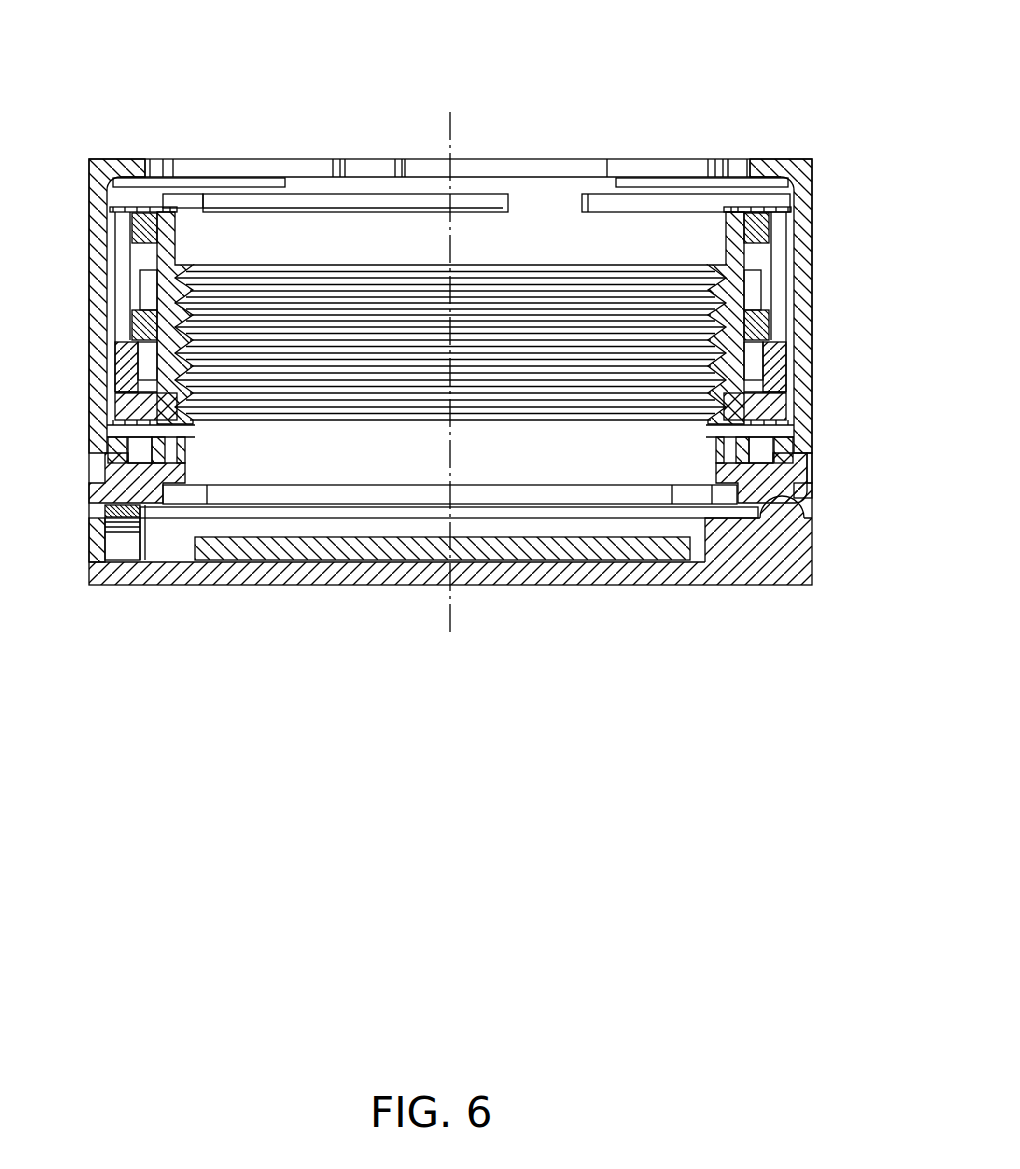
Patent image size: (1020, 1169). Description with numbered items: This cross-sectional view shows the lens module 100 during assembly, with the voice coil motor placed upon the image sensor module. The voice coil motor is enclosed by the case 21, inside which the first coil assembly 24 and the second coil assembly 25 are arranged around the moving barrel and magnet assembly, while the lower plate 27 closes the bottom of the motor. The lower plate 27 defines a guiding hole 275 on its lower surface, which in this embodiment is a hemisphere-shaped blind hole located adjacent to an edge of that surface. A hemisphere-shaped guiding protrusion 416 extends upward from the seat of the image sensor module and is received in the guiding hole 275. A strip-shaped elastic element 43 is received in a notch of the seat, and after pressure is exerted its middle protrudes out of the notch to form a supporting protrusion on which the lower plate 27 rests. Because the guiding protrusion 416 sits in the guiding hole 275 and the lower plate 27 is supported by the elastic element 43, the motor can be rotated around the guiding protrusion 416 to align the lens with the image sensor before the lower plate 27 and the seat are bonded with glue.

The lens module 100 is at (460, 49).
The case 21 is at (800, 372).
The first coil assembly 24 is at (763, 228).
The second coil assembly 25 is at (770, 350).
The lower plate 27 is at (770, 473).
The guiding hole 275 is at (777, 493).
The guiding protrusion 416 is at (780, 510).
The elastic element 43 is at (105, 512).